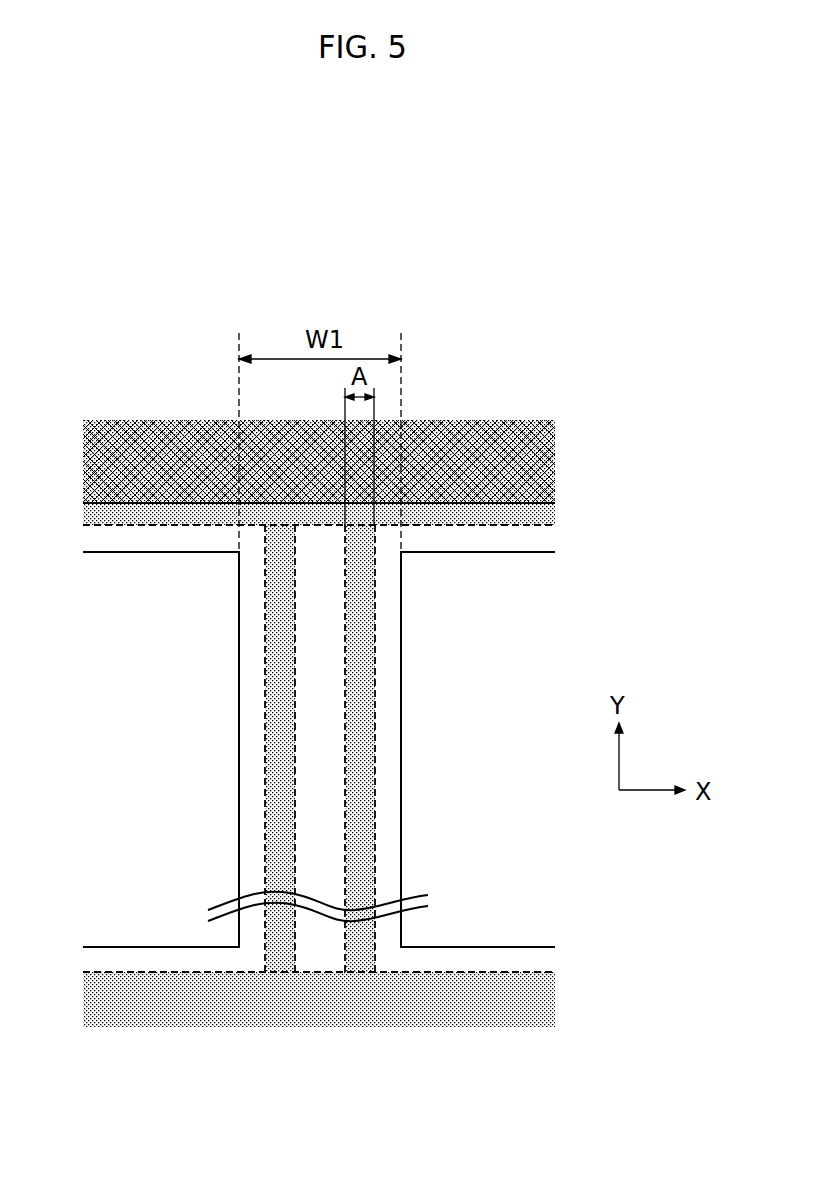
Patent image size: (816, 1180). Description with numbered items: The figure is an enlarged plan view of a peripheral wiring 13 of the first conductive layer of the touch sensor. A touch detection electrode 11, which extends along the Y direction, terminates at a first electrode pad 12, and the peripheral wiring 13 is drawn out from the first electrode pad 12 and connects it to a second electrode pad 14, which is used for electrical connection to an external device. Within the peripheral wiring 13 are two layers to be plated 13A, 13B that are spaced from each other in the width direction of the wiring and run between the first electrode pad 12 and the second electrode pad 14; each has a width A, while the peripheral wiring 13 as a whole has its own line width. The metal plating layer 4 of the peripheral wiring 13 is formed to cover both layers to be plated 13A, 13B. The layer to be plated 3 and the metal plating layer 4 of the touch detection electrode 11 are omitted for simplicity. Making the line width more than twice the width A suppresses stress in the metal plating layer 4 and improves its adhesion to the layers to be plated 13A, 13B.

The layer to be plated 3 is at (263, 635).
The metal plating layer 4 is at (255, 693).
The touch detection electrode 11 is at (512, 473).
The first electrode pad 12 is at (510, 540).
The peripheral wiring 13 is at (390, 660).
The layer to be plated 13A is at (262, 765).
The layer to be plated 13B is at (358, 780).
The second electrode pad 14 is at (534, 964).